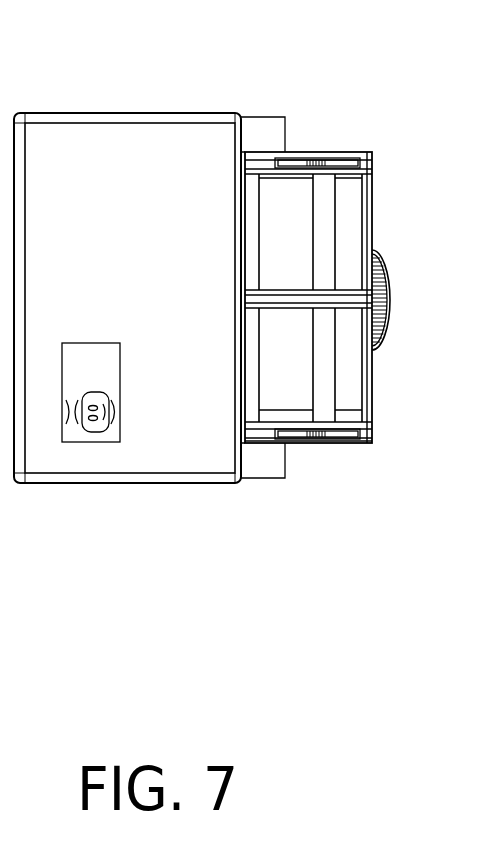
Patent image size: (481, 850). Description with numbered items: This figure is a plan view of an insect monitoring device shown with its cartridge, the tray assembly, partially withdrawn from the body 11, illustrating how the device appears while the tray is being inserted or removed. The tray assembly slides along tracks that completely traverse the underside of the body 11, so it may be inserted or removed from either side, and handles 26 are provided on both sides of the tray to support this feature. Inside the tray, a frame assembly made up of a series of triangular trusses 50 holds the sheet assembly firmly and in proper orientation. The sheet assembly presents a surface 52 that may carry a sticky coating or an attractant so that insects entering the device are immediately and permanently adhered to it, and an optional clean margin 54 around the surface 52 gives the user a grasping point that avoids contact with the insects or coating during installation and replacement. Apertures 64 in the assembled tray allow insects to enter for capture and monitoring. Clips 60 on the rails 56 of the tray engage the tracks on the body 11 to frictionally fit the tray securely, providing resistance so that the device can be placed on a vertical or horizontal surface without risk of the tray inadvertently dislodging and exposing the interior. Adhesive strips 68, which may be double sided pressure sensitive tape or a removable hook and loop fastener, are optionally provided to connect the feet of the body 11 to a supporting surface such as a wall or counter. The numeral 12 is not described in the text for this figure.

The body 11 is at (80, 108).
The housing 12 is at (180, 136).
The handles 26 is at (392, 272).
The trusses 50 is at (313, 300).
The surface 52 is at (280, 193).
The margin 54 is at (322, 394).
The rails 56 is at (352, 160).
The clips 60 is at (332, 447).
The apertures 64 is at (355, 368).
The adhesive strips 68 is at (260, 125).